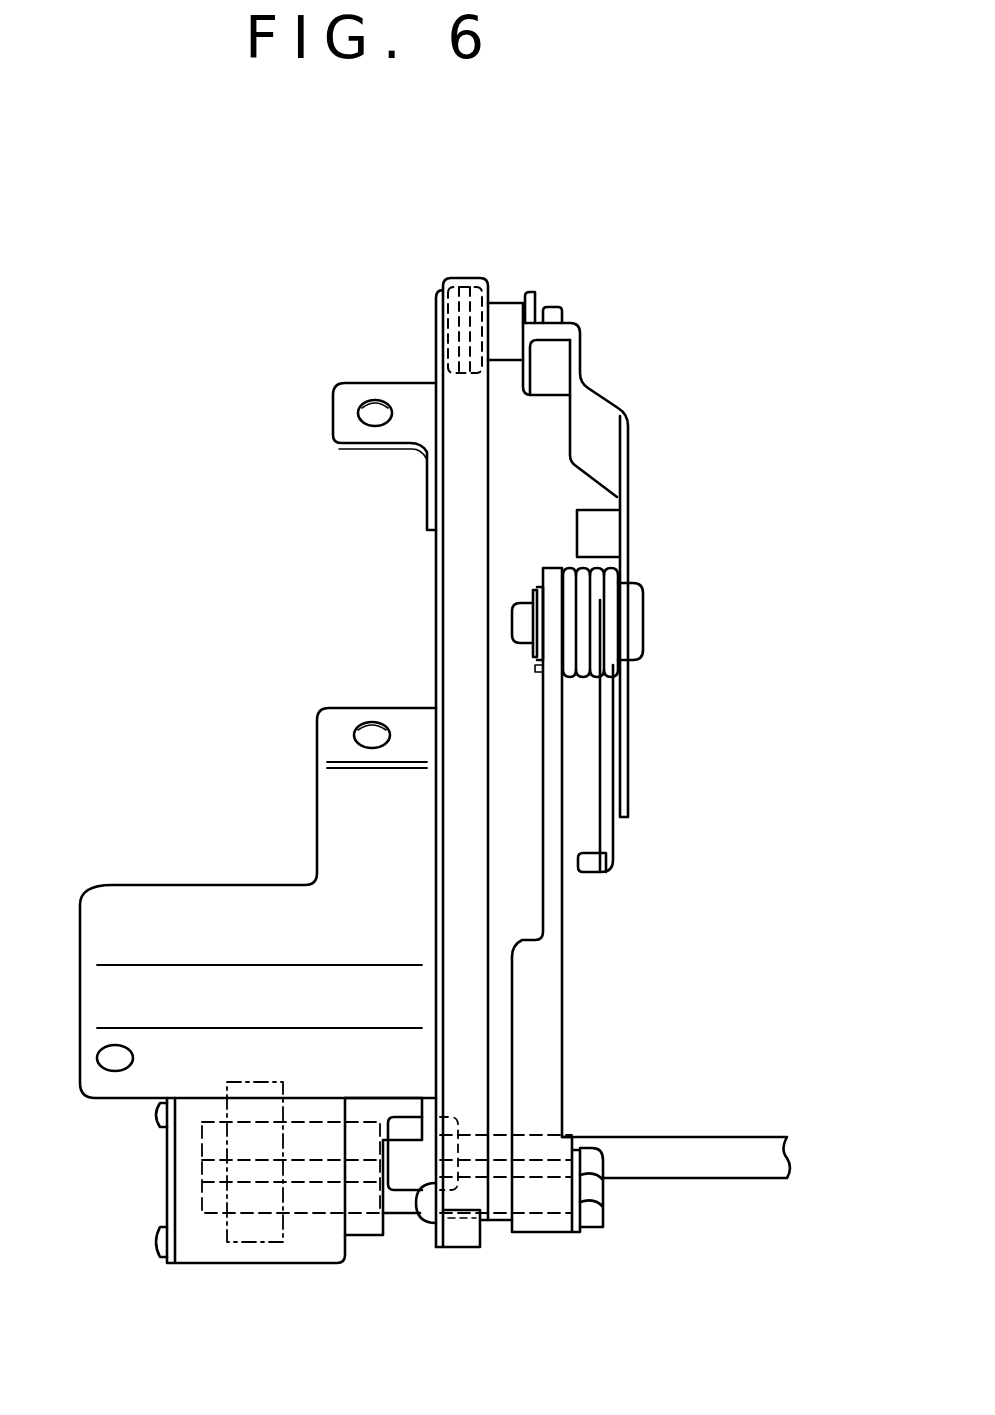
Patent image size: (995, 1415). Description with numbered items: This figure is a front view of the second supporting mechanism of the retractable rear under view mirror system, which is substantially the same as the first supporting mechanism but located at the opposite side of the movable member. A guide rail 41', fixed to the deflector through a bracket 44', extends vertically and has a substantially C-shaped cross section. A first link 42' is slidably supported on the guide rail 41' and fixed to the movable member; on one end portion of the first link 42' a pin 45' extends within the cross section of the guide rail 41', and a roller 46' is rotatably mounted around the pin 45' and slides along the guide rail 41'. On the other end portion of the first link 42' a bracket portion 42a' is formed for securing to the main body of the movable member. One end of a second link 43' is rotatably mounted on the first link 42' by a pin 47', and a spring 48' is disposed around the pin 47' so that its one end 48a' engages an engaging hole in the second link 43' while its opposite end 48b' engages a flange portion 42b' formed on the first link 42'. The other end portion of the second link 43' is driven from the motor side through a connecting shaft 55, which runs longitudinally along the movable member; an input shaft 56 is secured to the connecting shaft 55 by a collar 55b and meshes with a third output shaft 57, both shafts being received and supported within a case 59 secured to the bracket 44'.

The guide rail 41' is at (433, 762).
The first link 42' is at (621, 554).
The bracket portion 42a' is at (693, 690).
The flange portion 42b' is at (662, 538).
The second link 43' is at (587, 1094).
The bracket 44' is at (258, 740).
The pin 45' is at (527, 292).
The roller 46' is at (473, 279).
The pin 47' is at (658, 622).
The spring 48' is at (604, 852).
The one end of spring 48a' is at (435, 629).
The opposite end of spring 48b' is at (668, 754).
The connecting shaft 55 is at (659, 1155).
The collar 55b is at (410, 1180).
The input shaft 56 is at (307, 1145).
The third output shaft 57 is at (312, 1198).
The case 59 is at (195, 1238).